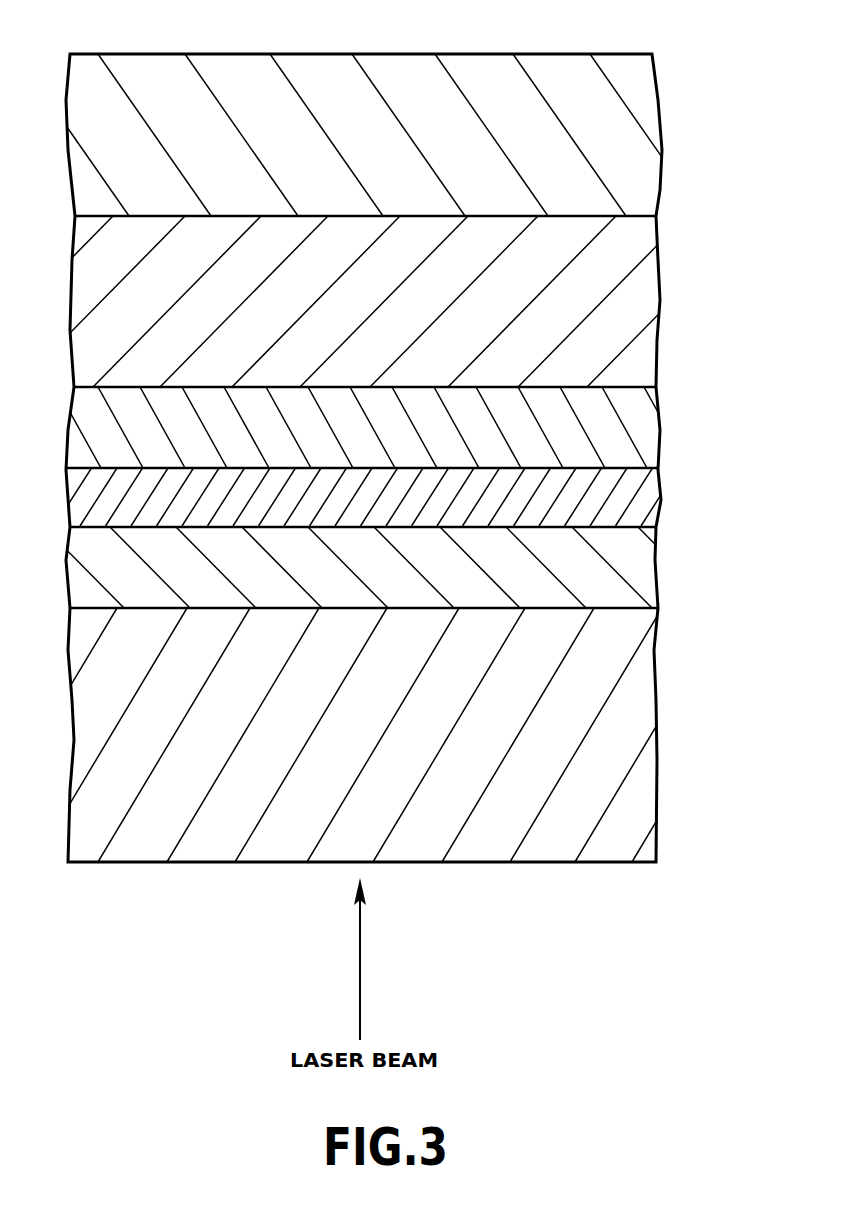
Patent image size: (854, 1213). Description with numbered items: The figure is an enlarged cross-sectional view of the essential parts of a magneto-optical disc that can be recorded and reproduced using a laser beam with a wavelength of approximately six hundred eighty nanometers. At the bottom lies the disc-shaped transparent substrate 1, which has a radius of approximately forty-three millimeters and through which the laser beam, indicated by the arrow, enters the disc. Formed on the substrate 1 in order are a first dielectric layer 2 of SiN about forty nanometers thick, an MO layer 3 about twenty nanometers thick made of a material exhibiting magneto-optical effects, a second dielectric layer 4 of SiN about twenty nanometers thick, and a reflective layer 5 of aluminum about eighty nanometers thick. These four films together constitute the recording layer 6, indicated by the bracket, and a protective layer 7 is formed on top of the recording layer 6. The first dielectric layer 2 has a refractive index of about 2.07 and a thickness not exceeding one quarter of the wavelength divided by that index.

The transparent substrate 1 is at (620, 737).
The first dielectric layer 2 is at (359, 567).
The MO layer 3 is at (612, 489).
The second dielectric layer 4 is at (610, 430).
The reflective layer 5 is at (625, 303).
The recording layer 6 is at (386, 412).
The protective layer 7 is at (622, 138).